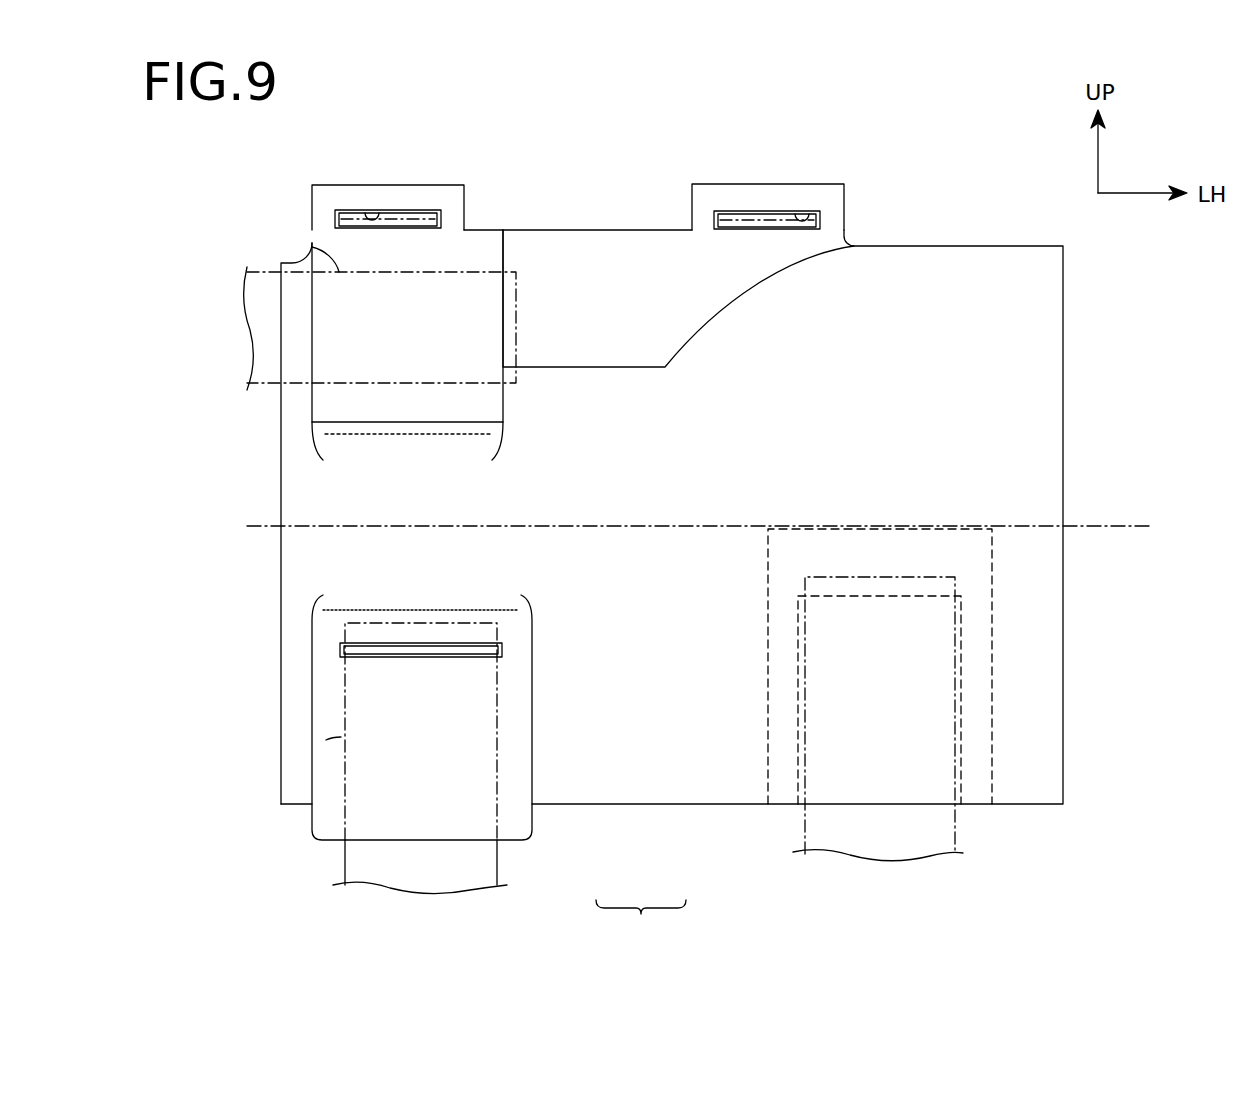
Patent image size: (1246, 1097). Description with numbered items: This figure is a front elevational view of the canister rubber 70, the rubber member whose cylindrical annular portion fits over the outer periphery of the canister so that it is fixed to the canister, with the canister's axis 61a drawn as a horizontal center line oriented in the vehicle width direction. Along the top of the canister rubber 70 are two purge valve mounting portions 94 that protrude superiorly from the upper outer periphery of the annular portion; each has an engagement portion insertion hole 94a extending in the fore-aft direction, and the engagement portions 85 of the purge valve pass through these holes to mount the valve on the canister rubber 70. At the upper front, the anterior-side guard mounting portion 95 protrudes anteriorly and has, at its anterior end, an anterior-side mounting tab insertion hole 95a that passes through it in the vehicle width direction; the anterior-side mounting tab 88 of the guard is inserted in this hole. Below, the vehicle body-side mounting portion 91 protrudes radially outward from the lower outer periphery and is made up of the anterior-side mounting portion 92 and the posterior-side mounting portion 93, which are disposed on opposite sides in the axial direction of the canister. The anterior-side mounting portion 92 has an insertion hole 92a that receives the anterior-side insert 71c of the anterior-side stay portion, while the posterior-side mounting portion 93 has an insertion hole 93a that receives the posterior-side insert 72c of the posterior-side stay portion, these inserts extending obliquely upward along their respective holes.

The canister rubber 70 is at (624, 142).
The engagement portion 85 is at (430, 210).
The purge valve mounting portion 94 is at (427, 185).
The engagement portion insertion hole 94a is at (373, 212).
The anterior-side guard mounting portion 95 is at (312, 312).
The anterior-side mounting tab insertion hole 95a is at (357, 383).
The anterior-side mounting tab 88 is at (312, 247).
The axis 61a is at (1110, 528).
The anterior-side mounting portion 92 is at (532, 743).
The insertion hole 92a is at (340, 772).
The anterior-side insert 71c is at (341, 737).
The posterior-side mounting portion 93 is at (768, 729).
The insertion hole 93a is at (796, 712).
The posterior-side insert 72c is at (796, 818).
The vehicle body-side mounting portion 91 is at (641, 922).